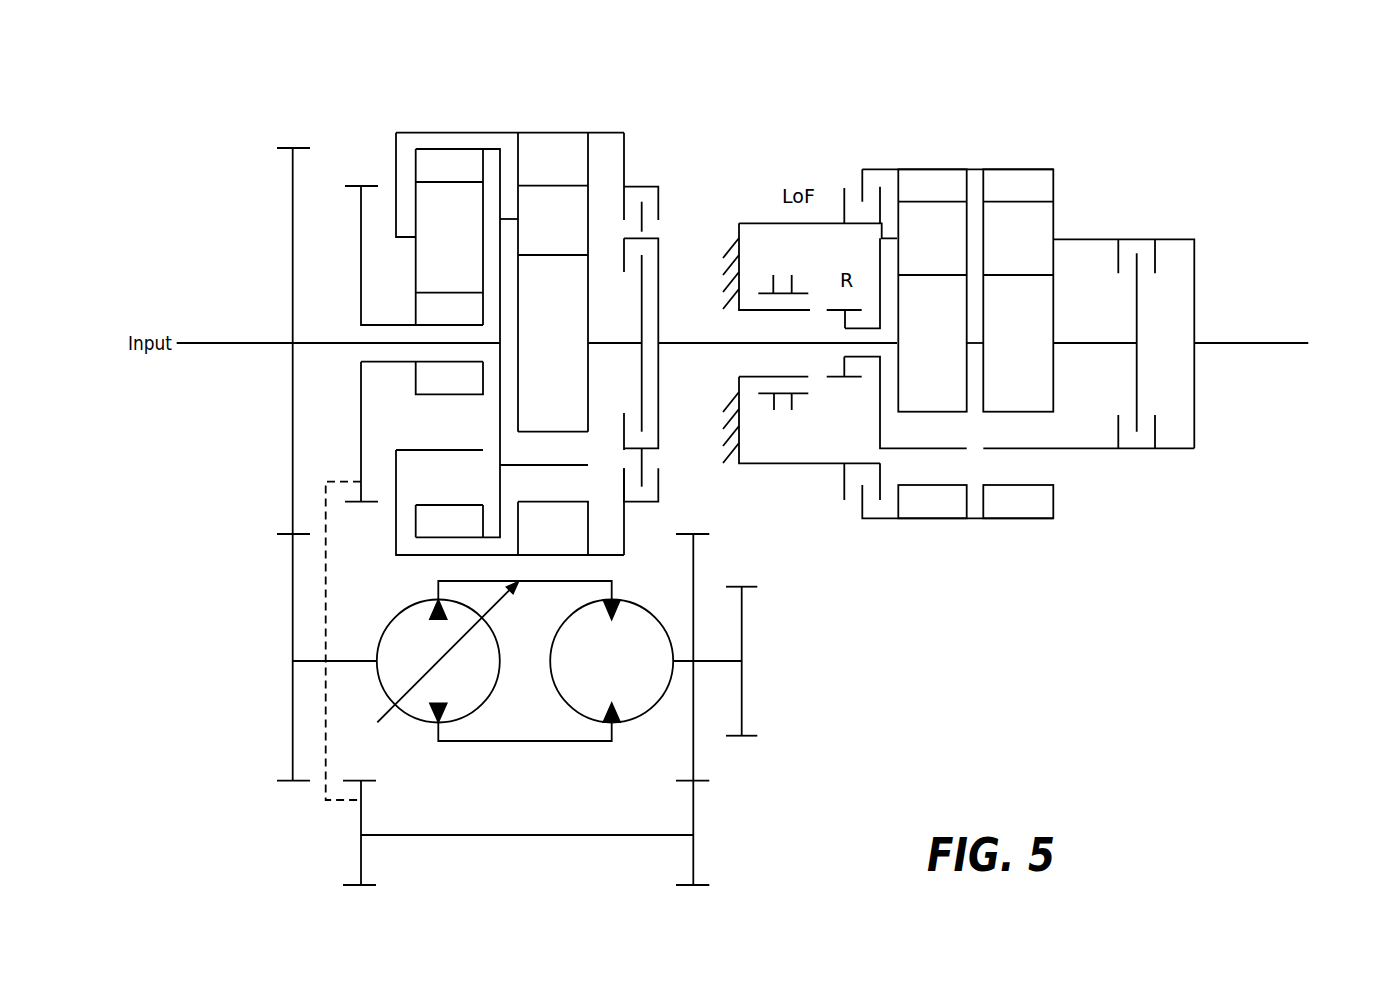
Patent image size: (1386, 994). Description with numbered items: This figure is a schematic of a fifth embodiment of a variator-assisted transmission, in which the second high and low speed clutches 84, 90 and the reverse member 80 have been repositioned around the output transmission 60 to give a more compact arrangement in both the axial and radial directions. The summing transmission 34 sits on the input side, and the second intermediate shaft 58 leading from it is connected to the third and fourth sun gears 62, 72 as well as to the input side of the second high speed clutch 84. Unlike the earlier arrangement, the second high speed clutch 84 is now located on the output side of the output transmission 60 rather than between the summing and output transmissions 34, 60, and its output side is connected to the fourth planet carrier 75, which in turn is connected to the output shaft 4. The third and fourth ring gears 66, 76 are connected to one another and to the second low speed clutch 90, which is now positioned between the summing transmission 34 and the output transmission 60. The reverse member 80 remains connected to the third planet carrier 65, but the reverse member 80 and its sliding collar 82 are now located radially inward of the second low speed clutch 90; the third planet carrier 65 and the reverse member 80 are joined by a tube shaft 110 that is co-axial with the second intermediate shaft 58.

The output shaft 4 is at (1257, 343).
The summing transmission 34 is at (507, 117).
The second intermediate shaft 58 is at (687, 342).
The output transmission 60 is at (975, 533).
The third sun gear 62 is at (937, 412).
The third planet carrier 65 is at (880, 238).
The third ring gear 66 is at (932, 168).
The fourth sun gear 72 is at (1054, 388).
The fourth planet carrier 75 is at (1085, 239).
The fourth ring gear 76 is at (1017, 168).
The reverse member 80 is at (842, 378).
The sliding collar 82 is at (783, 402).
The second high speed clutch 84 is at (1147, 239).
The second low speed clutch 90 is at (843, 193).
The tube shaft 110 is at (852, 328).